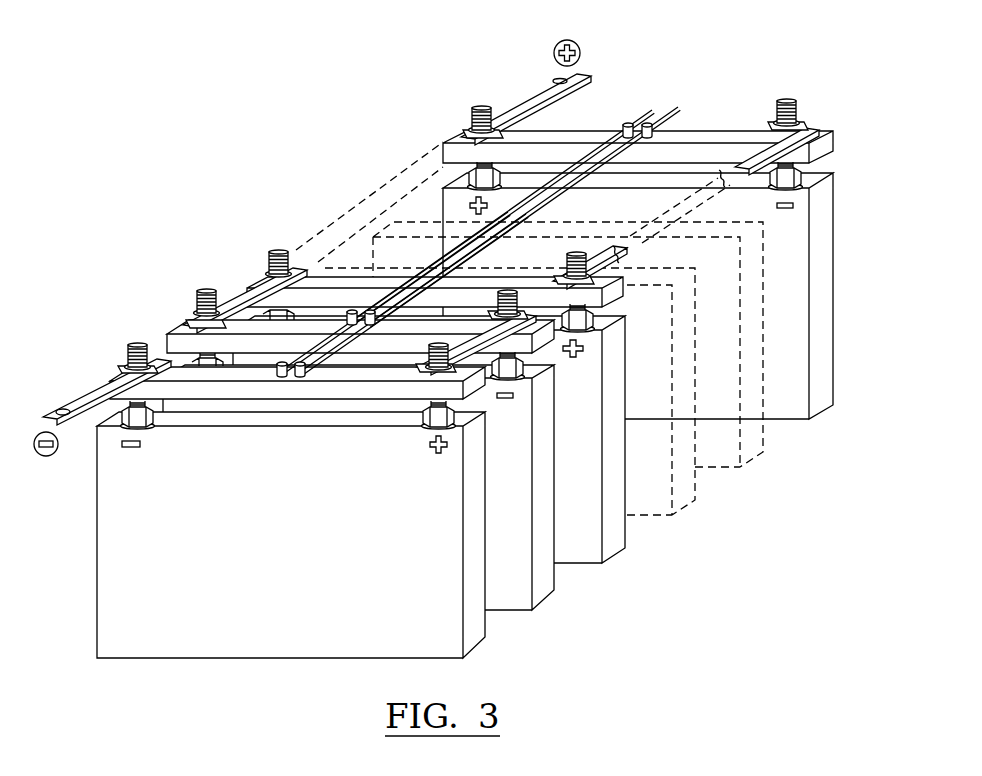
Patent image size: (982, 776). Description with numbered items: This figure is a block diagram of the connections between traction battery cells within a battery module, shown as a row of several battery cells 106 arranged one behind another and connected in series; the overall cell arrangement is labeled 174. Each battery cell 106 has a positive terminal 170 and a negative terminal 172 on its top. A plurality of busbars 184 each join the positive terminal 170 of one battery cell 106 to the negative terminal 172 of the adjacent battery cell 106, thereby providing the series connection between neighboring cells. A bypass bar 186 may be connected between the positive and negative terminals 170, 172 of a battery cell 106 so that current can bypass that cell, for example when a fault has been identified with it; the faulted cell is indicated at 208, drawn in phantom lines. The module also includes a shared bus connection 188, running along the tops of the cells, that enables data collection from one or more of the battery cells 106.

The battery cell 106 is at (835, 322).
The positive terminal 170 is at (592, 322).
The negative terminal 172 is at (803, 178).
The battery cell assembly 174 is at (176, 170).
The busbar 184 is at (234, 296).
The bypass bar 186 is at (317, 278).
The shared bus connection 188 is at (668, 106).
The faulted battery cell 208 is at (747, 462).